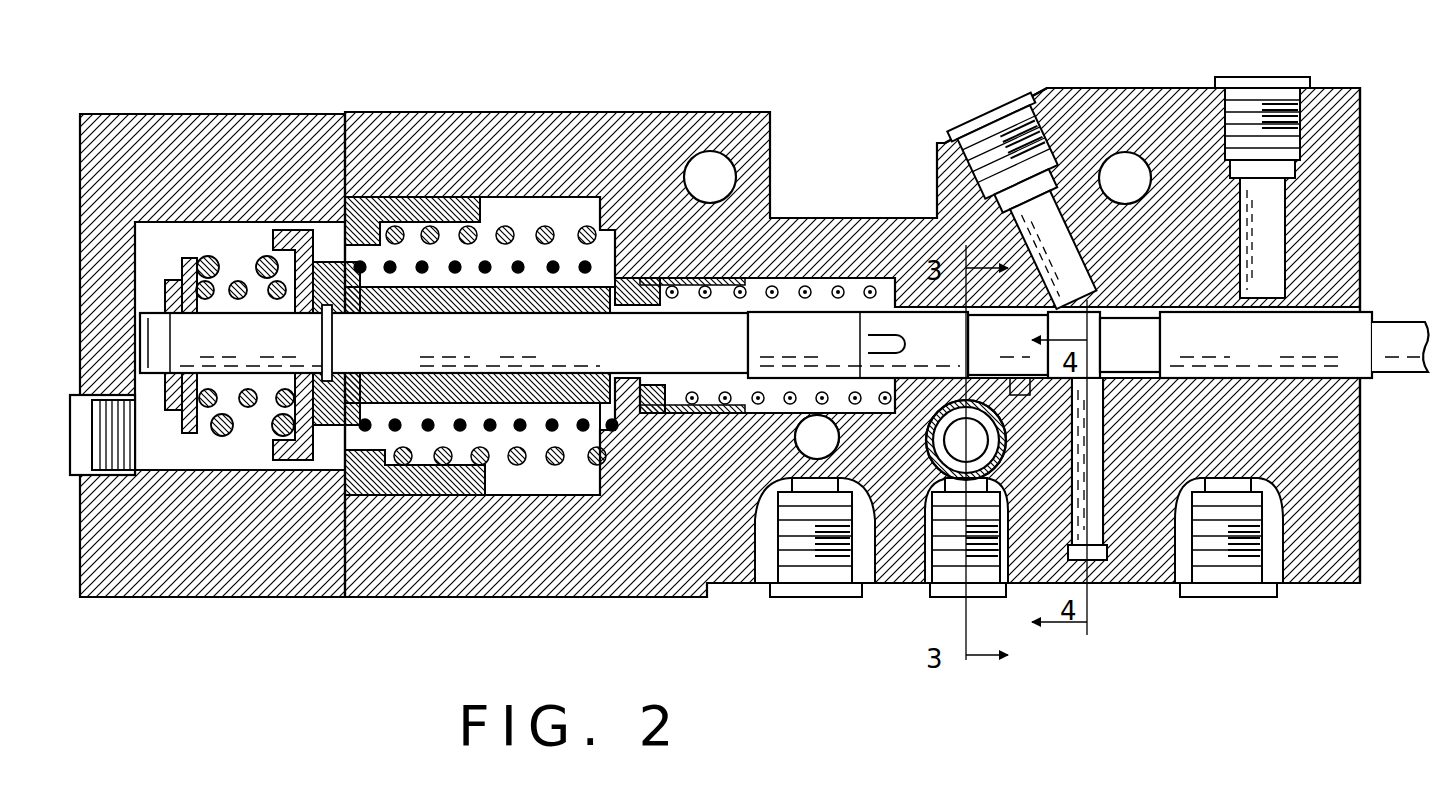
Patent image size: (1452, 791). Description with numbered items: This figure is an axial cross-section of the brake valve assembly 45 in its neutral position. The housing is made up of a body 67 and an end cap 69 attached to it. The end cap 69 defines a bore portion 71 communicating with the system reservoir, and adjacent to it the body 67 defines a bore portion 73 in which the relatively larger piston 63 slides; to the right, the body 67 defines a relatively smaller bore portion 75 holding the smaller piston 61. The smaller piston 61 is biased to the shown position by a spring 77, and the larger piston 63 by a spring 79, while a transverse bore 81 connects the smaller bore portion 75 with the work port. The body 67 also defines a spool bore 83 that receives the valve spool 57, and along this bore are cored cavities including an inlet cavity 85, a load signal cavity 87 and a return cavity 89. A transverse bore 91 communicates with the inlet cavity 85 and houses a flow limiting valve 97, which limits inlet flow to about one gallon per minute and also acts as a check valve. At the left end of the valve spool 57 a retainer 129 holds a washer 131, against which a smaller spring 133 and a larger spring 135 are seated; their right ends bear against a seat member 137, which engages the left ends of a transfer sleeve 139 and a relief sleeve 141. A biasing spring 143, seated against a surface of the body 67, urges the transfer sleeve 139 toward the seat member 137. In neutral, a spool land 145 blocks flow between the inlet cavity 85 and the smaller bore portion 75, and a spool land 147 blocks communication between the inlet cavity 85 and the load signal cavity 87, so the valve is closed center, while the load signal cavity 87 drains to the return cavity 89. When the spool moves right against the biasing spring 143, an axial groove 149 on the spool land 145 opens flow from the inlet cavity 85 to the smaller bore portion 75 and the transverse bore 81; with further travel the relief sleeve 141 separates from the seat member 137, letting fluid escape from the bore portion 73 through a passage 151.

The brake valve assembly 45 is at (506, 108).
The valve spool 57 is at (1218, 326).
The smaller piston 61 is at (680, 426).
The larger piston 63 is at (428, 206).
The body 67 is at (1172, 100).
The end cap 69 is at (221, 130).
The bore portion 71 is at (150, 466).
The bore portion 73 is at (530, 196).
The smaller bore portion 75 is at (846, 320).
The spring 77 is at (766, 289).
The spring 79 is at (520, 466).
The transverse bore 81 is at (808, 437).
The spool bore 83 is at (1018, 370).
The inlet cavity 85 is at (986, 306).
The load signal cavity 87 is at (1100, 386).
The return cavity 89 is at (1240, 385).
The transverse bore 91 is at (1000, 447).
The flow limiting valve 97 is at (925, 452).
The retainer 129 is at (150, 290).
The washer 131 is at (190, 255).
The smaller spring 133 is at (240, 285).
The larger spring 135 is at (226, 442).
The seat member 137 is at (297, 457).
The transfer sleeve 139 is at (503, 305).
The relief sleeve 141 is at (368, 312).
The biasing spring 143 is at (618, 256).
The spool land 145 is at (860, 330).
The spool land 147 is at (1100, 298).
The axial groove 149 is at (880, 346).
The passage 151 is at (352, 440).